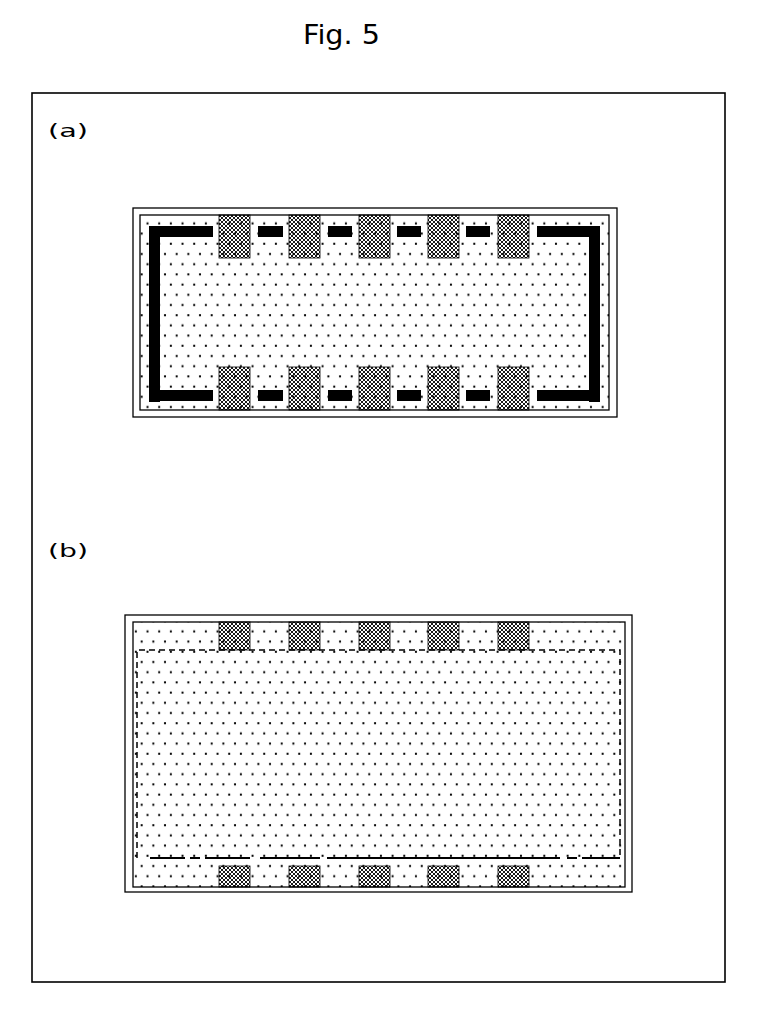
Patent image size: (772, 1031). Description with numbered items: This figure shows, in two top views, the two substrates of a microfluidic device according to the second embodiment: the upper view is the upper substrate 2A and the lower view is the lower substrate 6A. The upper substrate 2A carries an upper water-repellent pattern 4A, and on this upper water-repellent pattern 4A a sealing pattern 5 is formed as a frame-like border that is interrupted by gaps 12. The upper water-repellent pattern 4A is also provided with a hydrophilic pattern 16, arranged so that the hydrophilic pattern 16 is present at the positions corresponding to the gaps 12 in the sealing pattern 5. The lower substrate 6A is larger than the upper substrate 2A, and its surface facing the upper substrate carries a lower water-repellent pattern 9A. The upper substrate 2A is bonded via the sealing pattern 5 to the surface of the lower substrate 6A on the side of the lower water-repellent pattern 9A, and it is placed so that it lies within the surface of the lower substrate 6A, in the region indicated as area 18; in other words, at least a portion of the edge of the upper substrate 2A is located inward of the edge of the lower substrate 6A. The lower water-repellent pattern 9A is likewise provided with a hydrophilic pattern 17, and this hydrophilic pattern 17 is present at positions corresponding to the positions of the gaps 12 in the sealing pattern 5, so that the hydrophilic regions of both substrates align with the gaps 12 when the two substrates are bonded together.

The upper substrate 2A is at (517, 207).
The upper water-repellent pattern 4A is at (565, 362).
The sealing pattern 5 is at (184, 400).
The hydrophilic pattern 16 is at (241, 410).
The gaps 12 is at (327, 427).
The lower substrate 6A is at (517, 614).
The area 18 is at (583, 660).
The lower water-repellent pattern 9A is at (587, 753).
The hydrophilic pattern 17 is at (235, 868).